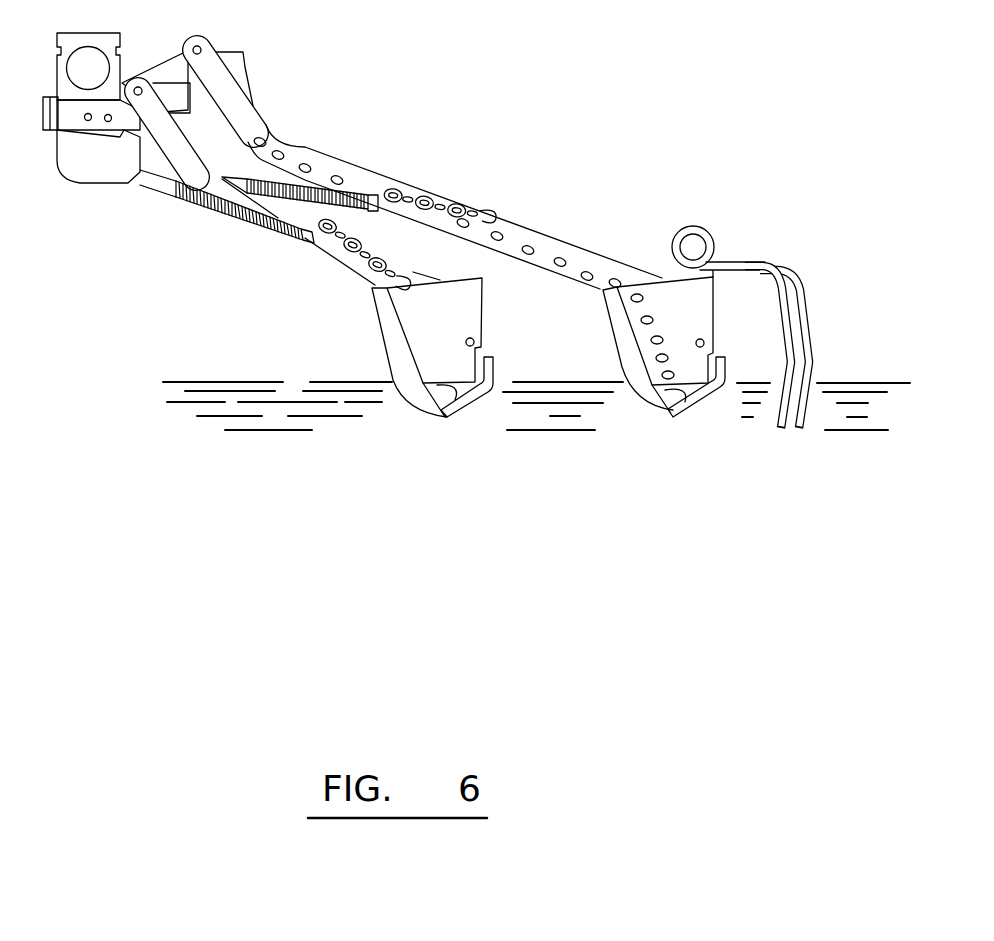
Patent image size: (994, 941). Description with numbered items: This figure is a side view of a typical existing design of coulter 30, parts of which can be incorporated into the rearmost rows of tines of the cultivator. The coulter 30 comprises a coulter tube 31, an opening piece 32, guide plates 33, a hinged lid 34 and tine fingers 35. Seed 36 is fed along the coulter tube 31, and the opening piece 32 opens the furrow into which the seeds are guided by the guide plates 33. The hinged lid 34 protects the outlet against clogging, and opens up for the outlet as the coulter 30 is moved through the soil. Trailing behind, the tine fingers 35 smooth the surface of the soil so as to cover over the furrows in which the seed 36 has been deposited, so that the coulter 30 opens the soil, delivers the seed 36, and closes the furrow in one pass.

The coulter 30 is at (467, 181).
The coulter tube 31 is at (552, 246).
The opening piece 32 is at (645, 400).
The guide plates 33 is at (695, 312).
The hinged lid 34 is at (700, 392).
The tine fingers 35 is at (793, 299).
The seed 36 is at (340, 175).